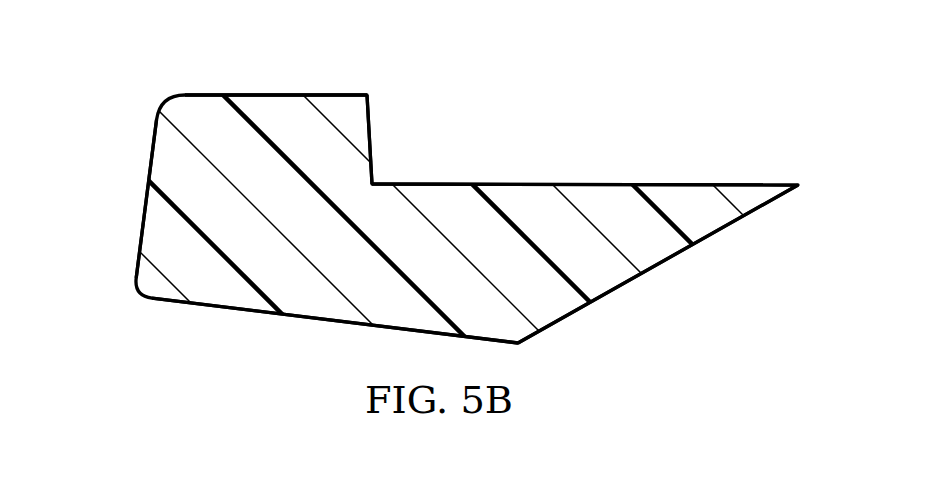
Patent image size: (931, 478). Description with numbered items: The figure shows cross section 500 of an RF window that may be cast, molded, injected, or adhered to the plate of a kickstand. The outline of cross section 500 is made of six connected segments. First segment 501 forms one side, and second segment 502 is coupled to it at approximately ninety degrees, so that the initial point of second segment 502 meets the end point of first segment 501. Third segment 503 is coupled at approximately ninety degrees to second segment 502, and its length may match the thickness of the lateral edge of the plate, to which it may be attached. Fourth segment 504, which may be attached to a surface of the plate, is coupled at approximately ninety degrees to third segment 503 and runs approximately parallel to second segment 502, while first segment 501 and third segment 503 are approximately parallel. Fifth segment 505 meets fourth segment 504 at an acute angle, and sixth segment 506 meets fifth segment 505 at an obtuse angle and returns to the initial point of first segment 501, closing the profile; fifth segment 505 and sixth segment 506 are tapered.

The cross section 500 is at (565, 68).
The first segment 501 is at (143, 217).
The second segment 502 is at (268, 93).
The third segment 503 is at (371, 137).
The fourth segment 504 is at (593, 183).
The fifth segment 505 is at (619, 288).
The sixth segment 506 is at (233, 308).